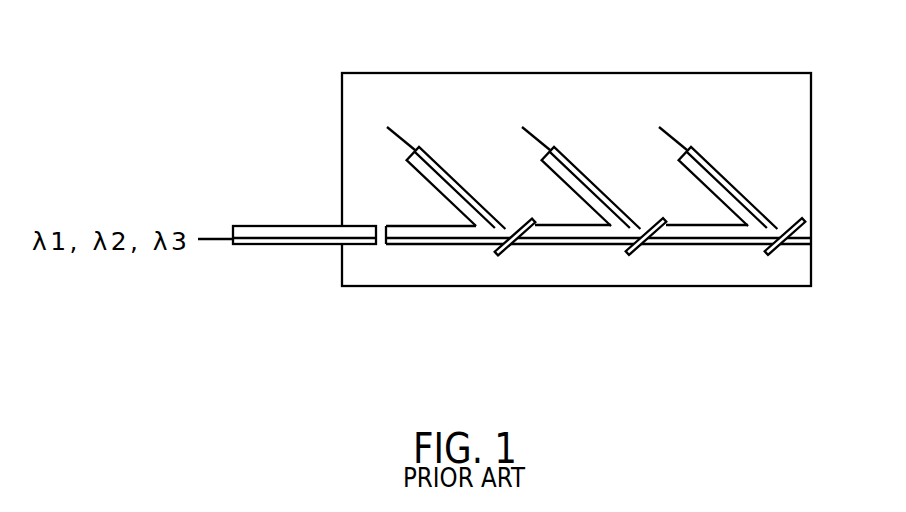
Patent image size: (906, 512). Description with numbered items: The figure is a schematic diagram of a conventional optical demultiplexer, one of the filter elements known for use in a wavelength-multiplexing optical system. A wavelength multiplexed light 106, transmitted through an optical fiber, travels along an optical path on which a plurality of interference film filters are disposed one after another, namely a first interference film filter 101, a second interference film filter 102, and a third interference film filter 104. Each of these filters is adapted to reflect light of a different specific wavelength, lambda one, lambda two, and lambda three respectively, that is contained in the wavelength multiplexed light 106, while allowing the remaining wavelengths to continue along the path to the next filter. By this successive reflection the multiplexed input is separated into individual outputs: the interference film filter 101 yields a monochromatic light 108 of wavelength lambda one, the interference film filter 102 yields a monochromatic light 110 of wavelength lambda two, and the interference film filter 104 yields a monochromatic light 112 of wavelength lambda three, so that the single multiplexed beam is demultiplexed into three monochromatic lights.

The interference film filter 101 is at (512, 248).
The interference film filter 102 is at (645, 248).
The interference film filter 104 is at (782, 248).
The wavelength multiplexed light 106 is at (213, 239).
The monochromatic light 108 is at (398, 135).
The monochromatic light 110 is at (536, 135).
The monochromatic light 112 is at (671, 135).